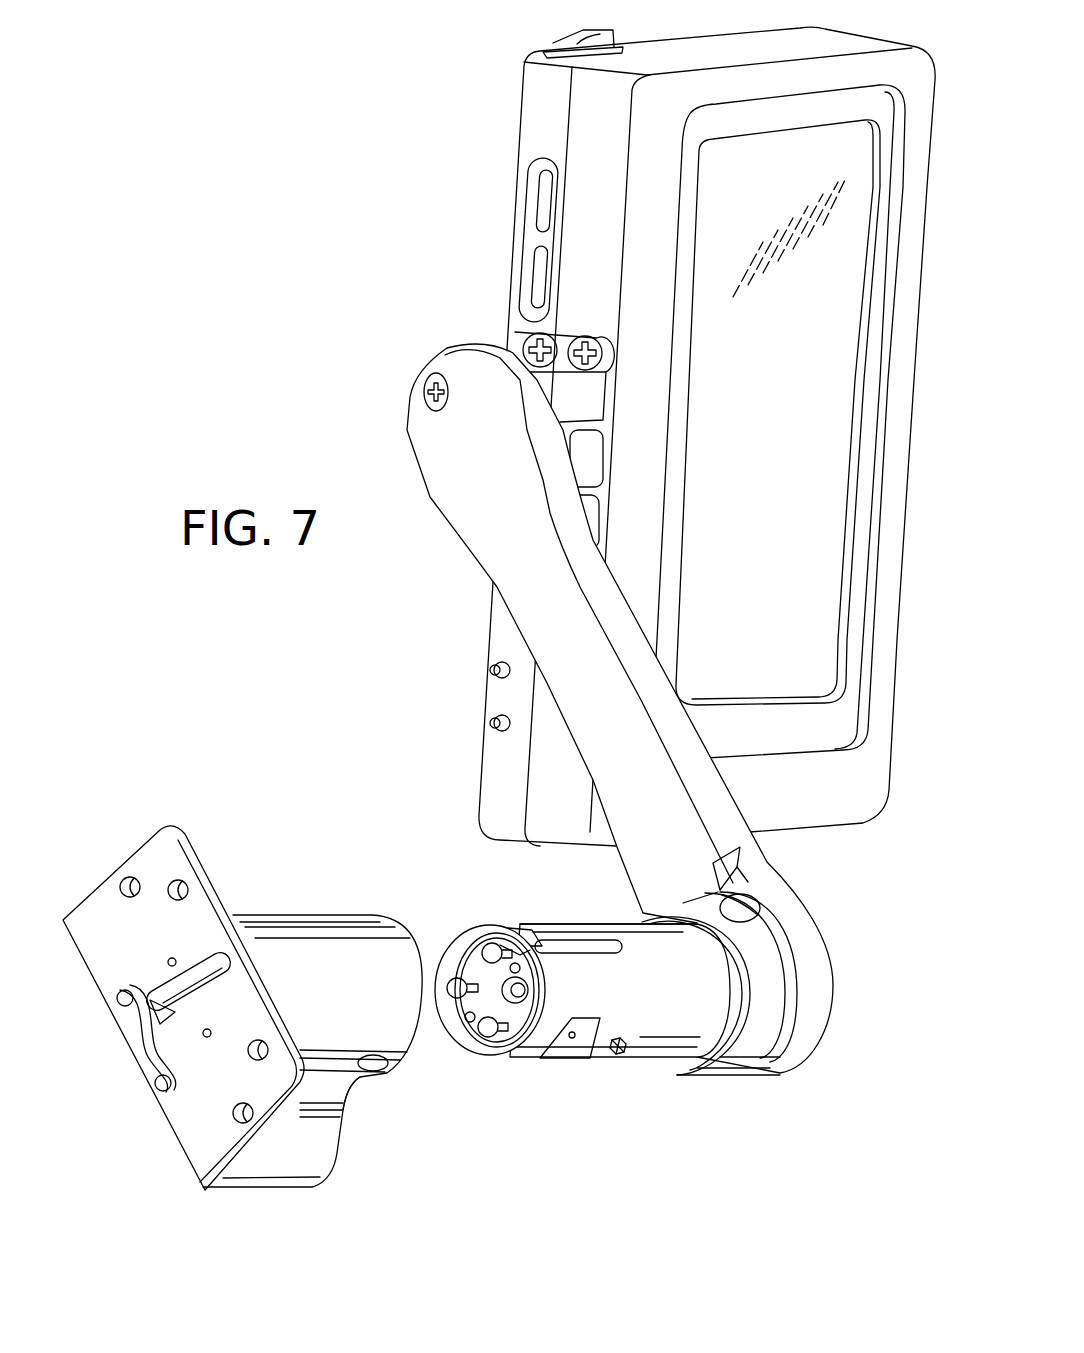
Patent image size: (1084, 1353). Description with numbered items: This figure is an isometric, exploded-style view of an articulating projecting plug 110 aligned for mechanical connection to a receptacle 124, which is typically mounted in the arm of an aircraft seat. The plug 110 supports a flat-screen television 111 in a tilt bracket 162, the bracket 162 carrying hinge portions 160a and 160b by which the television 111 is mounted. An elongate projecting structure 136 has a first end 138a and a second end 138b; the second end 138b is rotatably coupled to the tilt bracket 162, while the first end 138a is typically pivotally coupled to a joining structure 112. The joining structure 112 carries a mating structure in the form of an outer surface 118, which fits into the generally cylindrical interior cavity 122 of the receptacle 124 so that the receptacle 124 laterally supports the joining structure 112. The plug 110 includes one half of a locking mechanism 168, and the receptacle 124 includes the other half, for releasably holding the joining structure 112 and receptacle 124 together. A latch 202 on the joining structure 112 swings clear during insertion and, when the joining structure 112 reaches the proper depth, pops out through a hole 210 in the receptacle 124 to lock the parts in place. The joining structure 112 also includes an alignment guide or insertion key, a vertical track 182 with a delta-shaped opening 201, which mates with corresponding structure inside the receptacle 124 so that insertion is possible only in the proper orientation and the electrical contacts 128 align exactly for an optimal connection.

The articulating projecting plug 110 is at (410, 625).
The flat-screen television 111 is at (530, 118).
The joining structure 112 is at (658, 1037).
The outer surface 118 is at (633, 947).
The interior cavity 122 is at (440, 930).
The receptacle 124 is at (312, 920).
The connector pins 128 is at (475, 1058).
The elongate projecting structure 136 is at (680, 740).
The first end 138a is at (830, 977).
The second end 138b is at (443, 365).
The upper hinge screws 160a is at (583, 393).
The lower hinge portion 160b is at (590, 510).
The tilt bracket 162 is at (583, 420).
The locking mechanism 168 is at (618, 1055).
The vertical track 182 is at (563, 947).
The delta-shaped opening 201 is at (520, 955).
The latch 202 is at (610, 1053).
The hole 210 is at (374, 1078).